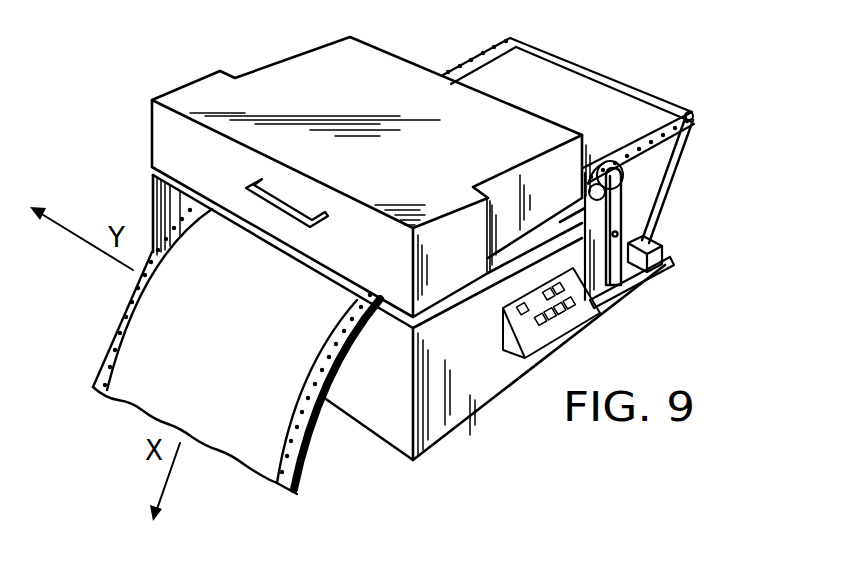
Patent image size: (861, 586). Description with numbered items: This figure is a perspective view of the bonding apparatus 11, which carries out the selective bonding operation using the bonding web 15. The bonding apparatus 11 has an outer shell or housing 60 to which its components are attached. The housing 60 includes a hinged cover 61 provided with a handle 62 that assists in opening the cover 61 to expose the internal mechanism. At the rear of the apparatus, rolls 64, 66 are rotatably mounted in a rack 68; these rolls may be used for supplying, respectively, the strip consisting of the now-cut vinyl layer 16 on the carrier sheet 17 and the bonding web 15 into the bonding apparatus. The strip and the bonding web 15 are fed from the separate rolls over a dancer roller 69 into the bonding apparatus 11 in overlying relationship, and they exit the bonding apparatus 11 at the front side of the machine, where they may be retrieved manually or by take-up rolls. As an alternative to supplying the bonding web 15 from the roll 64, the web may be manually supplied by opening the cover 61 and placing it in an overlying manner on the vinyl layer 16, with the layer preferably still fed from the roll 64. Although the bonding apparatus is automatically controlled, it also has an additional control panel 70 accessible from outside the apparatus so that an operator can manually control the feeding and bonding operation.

The bonding apparatus 11 is at (122, 108).
The bonding web 15 is at (318, 324).
The vinyl layer 16 is at (530, 305).
The carrier sheet 17 is at (318, 414).
The housing 60 is at (474, 392).
The hinged cover 61 is at (255, 90).
The handle 62 is at (245, 185).
The roll 64 is at (642, 138).
The roll 66 is at (630, 216).
The rack 68 is at (625, 285).
The dancer roller 69 is at (693, 116).
The control panel 70 is at (590, 326).